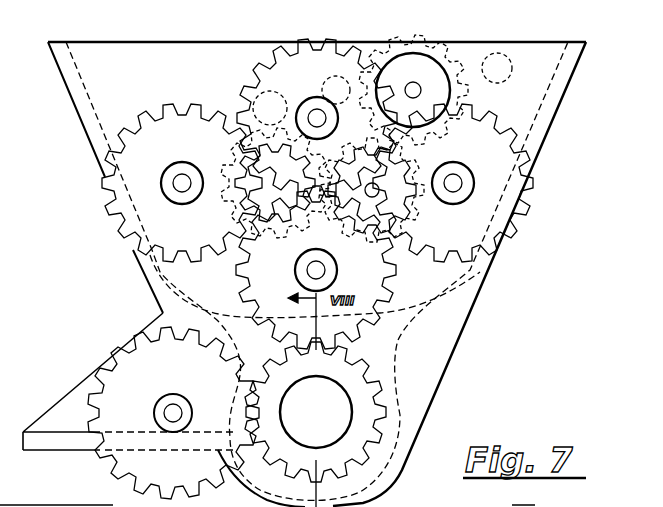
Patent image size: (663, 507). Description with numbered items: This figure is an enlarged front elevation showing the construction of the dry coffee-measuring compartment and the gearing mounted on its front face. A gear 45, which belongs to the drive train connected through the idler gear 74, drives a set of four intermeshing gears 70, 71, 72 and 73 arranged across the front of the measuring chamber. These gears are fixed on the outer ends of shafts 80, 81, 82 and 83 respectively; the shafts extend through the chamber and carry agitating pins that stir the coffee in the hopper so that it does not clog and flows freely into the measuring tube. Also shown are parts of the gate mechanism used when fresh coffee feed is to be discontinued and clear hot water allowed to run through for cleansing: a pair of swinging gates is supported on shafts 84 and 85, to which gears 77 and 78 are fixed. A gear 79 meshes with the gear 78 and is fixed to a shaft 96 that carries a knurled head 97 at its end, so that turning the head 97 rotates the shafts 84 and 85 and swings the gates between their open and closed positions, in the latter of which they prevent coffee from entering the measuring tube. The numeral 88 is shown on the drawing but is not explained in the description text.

The gear 70 is at (132, 132).
The shaft 80 is at (182, 183).
The gear 71 is at (258, 77).
The shaft 81 is at (317, 118).
The gear 72 is at (493, 125).
The shaft 82 is at (453, 183).
The gear 73 is at (370, 272).
The shaft 83 is at (316, 270).
The idler gear 74 is at (140, 347).
The gear 45 is at (347, 365).
The shaft 96 is at (337, 403).
The knurled head 97 is at (437, 92).
The shaft 88 is at (413, 90).
The gear 79 is at (468, 72).
The gear 77 is at (270, 108).
The gear 78 is at (348, 137).
The shaft 84 is at (253, 178).
The shaft 85 is at (372, 190).